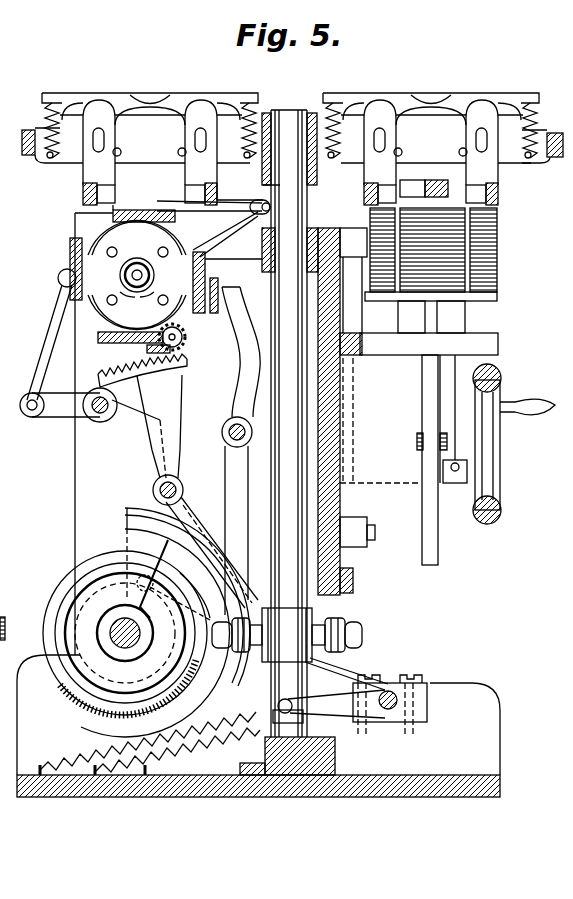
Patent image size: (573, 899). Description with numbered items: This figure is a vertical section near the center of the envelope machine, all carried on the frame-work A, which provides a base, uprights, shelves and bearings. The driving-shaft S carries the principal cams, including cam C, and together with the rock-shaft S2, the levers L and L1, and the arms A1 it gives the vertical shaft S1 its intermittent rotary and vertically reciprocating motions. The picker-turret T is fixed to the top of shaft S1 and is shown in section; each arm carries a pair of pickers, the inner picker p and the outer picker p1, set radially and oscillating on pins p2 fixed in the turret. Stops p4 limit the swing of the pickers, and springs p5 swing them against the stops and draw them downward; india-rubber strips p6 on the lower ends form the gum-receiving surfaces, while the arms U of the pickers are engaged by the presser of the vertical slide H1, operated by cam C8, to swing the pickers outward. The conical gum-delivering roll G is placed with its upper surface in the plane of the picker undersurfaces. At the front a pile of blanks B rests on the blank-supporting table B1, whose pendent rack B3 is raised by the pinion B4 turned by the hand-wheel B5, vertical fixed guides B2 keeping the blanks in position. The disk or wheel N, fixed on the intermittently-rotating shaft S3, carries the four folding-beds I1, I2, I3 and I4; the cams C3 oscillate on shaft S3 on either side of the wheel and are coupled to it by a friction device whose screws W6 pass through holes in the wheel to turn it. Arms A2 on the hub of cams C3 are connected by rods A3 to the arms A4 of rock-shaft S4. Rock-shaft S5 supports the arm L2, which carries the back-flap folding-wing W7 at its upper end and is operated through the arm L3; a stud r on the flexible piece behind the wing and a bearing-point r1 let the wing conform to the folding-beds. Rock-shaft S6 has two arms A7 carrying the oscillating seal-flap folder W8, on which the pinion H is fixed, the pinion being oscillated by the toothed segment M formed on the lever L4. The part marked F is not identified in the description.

The arms of the pickers U is at (182, 96).
The pins p2 is at (195, 135).
The stops p4 is at (178, 152).
The outer picker p1 is at (291, 174).
The inner picker p is at (287, 175).
The springs p5 is at (60, 120).
The picker-turret T is at (230, 125).
The india-rubber strips p6 is at (83, 203).
The folding-bed I1 is at (160, 210).
The frame block F is at (352, 502).
The gum-delivering roll G is at (213, 219).
The vertical shaft S1 is at (288, 112).
The frame-work A is at (250, 505).
The arms A1 is at (255, 640).
The folding-bed I4 is at (70, 260).
The arms A2 is at (58, 280).
The rods A3 is at (49, 342).
The arms A4 is at (40, 414).
The rock-shaft S4 is at (98, 414).
The lever L4 is at (148, 412).
The folding-bed I3 is at (98, 337).
The seal-flap folder W8 is at (147, 349).
The pinion H is at (186, 334).
The toothed segment M is at (190, 360).
The arms A7 is at (178, 418).
The rock-shaft S6 is at (184, 492).
The disk or wheel N is at (137, 274).
The screws W6 is at (163, 258).
The intermittently-rotating shaft S3 is at (137, 268).
The folding-bed I2 is at (206, 256).
The back-flap folding-wing W7 is at (220, 278).
The arm L2 is at (241, 352).
The rock-shaft S5 is at (222, 432).
The arm L3 is at (236, 530).
The cam C is at (165, 622).
The driving-shaft S is at (125, 633).
The cams C3 is at (147, 732).
The cam C8 is at (0, 620).
The pile of blanks B is at (490, 240).
The blank-supporting table B1 is at (500, 298).
The vertical fixed guides B2 is at (398, 318).
The pendent rack B3 is at (438, 540).
The pinion B4 is at (418, 438).
The hand-wheel B5 is at (502, 376).
The lever L1 is at (346, 674).
The lever L is at (331, 704).
The rock-shaft S2 is at (388, 712).
The vertical slide H1 is at (9, 68).
The stud r is at (3, 289).
The bearing-point r1 is at (6, 356).